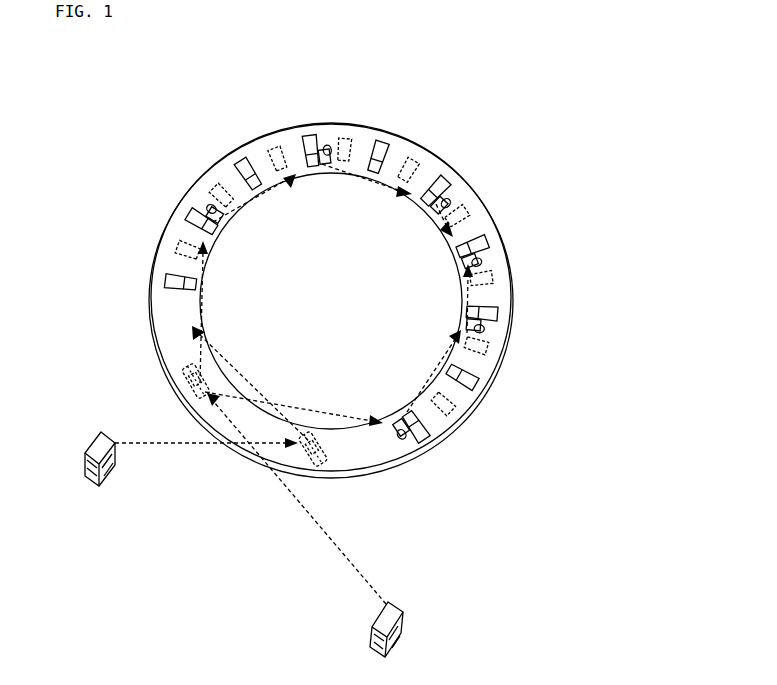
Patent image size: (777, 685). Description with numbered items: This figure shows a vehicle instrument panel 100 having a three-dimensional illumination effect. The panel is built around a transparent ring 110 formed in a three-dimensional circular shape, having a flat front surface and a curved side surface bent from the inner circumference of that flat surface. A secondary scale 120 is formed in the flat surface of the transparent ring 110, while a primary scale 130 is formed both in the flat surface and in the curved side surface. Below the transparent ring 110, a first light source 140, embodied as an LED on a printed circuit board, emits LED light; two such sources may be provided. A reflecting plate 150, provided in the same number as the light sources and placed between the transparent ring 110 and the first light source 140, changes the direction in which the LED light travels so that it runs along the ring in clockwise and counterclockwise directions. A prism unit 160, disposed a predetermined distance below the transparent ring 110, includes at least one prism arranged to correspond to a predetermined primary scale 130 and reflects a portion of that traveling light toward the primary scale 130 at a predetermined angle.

The vehicle instrument panel 100 is at (339, 97).
The transparent ring 110 is at (478, 193).
The secondary scale 120 is at (499, 270).
The primary scale 130 is at (498, 309).
The first light source 140 is at (404, 621).
The reflecting plate 150 is at (183, 373).
The prism unit 160 is at (407, 426).